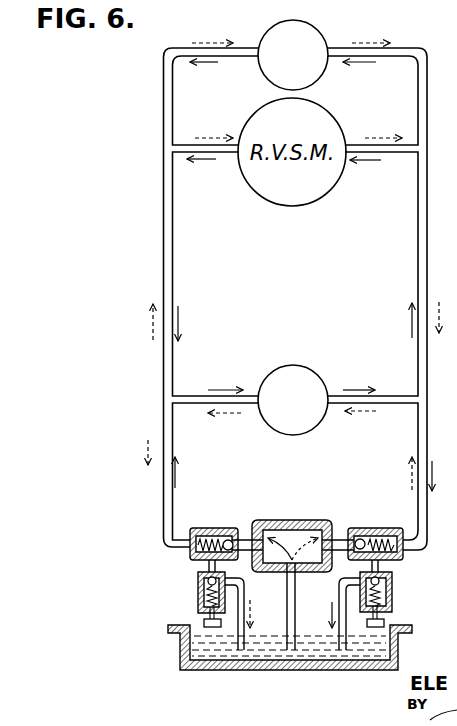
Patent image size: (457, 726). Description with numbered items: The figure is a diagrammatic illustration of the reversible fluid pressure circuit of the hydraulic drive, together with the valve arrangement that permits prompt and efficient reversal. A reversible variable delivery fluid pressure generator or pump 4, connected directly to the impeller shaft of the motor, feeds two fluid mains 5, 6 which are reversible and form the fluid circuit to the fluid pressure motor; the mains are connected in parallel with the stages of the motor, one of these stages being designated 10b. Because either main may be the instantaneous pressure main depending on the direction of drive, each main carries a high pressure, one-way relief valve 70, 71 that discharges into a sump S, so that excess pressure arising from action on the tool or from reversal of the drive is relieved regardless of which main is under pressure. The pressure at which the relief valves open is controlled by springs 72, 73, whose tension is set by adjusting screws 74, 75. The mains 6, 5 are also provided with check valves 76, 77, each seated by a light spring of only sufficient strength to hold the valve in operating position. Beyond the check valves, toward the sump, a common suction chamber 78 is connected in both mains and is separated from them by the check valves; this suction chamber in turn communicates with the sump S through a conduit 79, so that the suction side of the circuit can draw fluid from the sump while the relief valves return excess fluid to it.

The reversible variable delivery fluid pressure generator or pump 4 is at (300, 366).
The fluid main 5 is at (426, 284).
The fluid main 6 is at (171, 372).
The stage of the motor 10b is at (320, 72).
The high pressure one-way relief valve 70 is at (198, 586).
The high pressure one-way relief valve 71 is at (392, 583).
The spring 72 is at (210, 597).
The spring 73 is at (392, 598).
The adjusting screw 74 is at (204, 623).
The adjusting screw 75 is at (386, 623).
The check valve 76 is at (226, 537).
The check valve 77 is at (376, 536).
The common suction chamber 78 is at (290, 536).
The conduit 79 is at (293, 608).
The sump S is at (180, 651).